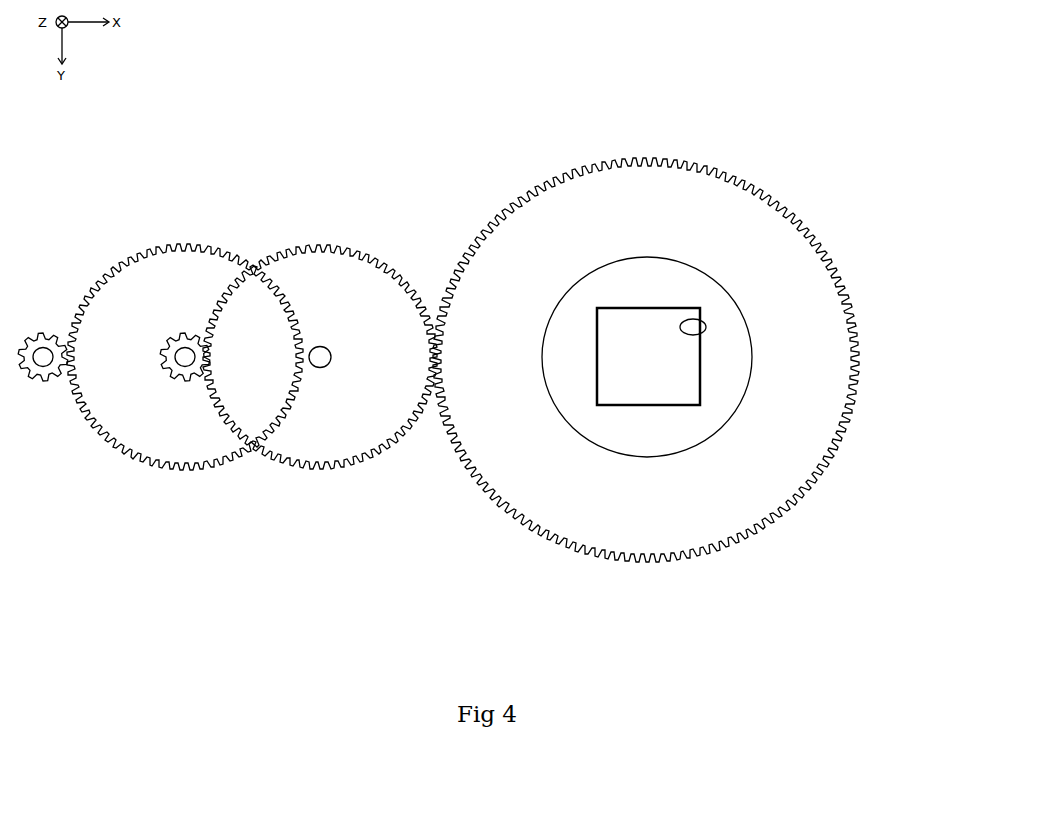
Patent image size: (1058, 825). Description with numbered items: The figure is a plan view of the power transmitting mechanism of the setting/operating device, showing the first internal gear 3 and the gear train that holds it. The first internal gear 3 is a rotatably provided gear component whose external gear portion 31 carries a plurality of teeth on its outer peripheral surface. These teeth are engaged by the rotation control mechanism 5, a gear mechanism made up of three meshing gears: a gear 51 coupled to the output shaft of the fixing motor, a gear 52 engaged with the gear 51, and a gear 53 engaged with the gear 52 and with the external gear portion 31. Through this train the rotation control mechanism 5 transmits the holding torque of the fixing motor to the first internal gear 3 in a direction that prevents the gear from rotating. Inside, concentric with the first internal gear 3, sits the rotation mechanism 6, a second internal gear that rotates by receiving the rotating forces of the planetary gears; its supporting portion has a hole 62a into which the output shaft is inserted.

The first internal gear 3 is at (614, 332).
The external gear portion 31 is at (470, 237).
The rotation mechanism 6 is at (735, 357).
The hole 62a is at (704, 333).
The rotation control mechanism 5 is at (227, 413).
The gear 51 is at (43, 443).
The gear 52 is at (118, 448).
The gear 53 is at (285, 462).